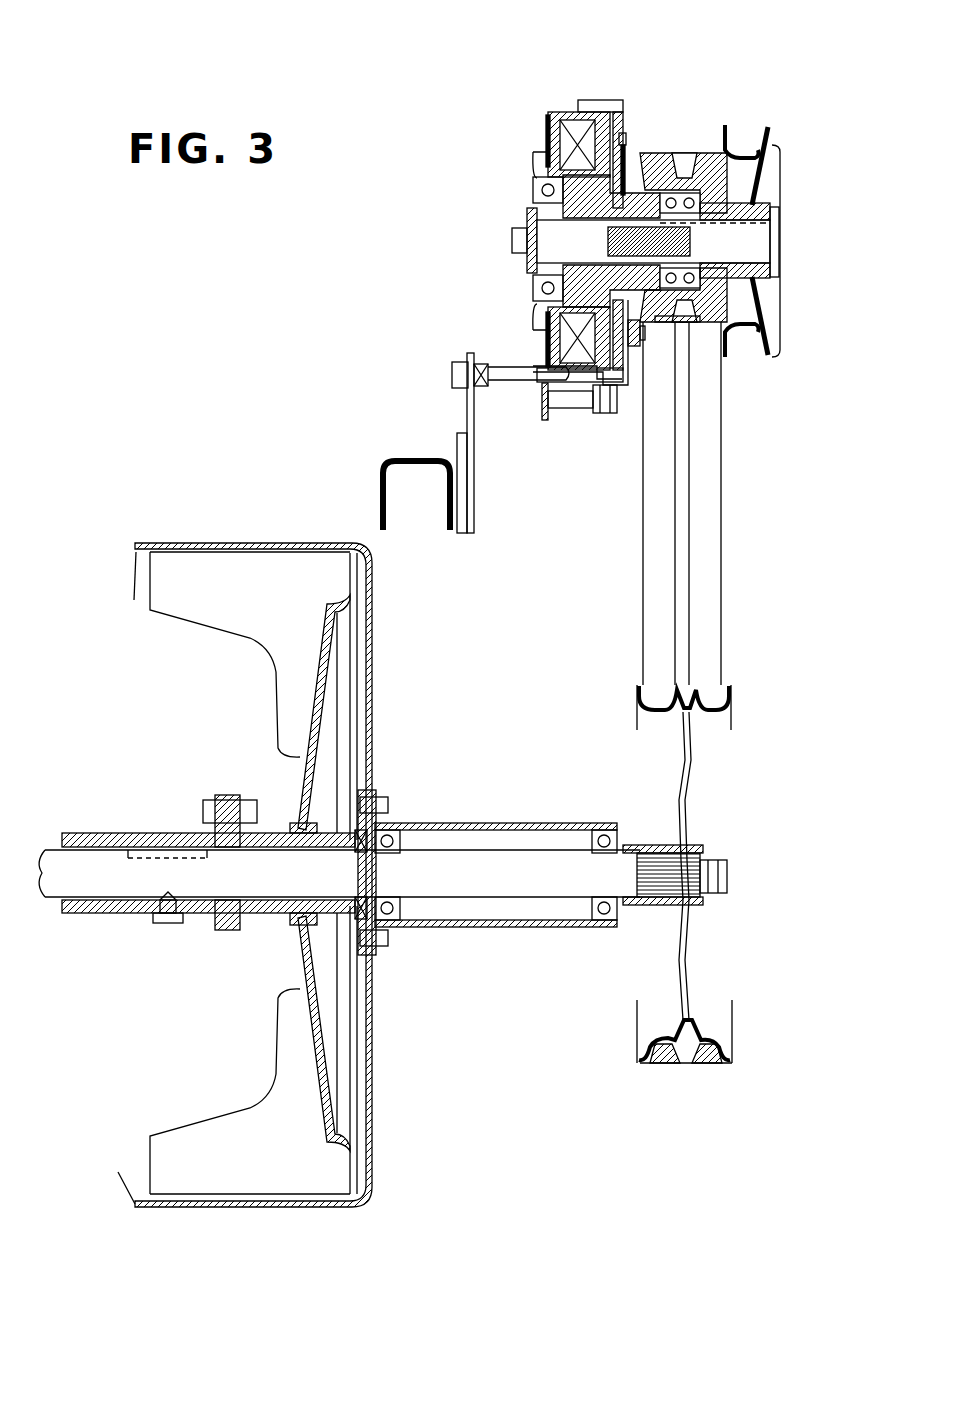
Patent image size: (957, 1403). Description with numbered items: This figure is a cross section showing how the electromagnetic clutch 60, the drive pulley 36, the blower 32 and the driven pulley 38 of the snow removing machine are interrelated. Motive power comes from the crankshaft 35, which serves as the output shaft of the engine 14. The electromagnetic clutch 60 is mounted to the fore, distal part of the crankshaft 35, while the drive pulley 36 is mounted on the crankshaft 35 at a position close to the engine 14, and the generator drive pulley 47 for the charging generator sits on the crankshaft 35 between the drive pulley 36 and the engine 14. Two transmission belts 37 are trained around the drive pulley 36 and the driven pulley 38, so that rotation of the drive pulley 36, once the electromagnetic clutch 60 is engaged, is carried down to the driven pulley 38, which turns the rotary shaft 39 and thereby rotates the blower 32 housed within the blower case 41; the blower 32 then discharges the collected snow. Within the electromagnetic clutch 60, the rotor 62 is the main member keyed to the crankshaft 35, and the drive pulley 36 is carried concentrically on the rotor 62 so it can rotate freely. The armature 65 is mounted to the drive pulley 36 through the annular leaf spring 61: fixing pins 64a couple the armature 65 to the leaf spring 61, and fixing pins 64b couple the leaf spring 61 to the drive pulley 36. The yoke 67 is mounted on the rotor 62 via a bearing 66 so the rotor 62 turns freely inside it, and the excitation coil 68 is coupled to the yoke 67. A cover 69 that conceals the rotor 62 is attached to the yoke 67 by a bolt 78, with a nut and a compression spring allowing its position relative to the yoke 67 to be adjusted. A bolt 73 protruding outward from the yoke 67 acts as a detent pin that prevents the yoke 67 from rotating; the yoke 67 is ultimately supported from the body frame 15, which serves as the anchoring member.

The engine 14 is at (809, 157).
The body frame 15 is at (403, 458).
The blower 32 is at (192, 577).
The crankshaft 35 is at (752, 243).
The drive pulley 36 is at (680, 153).
The transmission belts 37 is at (722, 608).
The driven pulley 38 is at (692, 755).
The rotary shaft 39 is at (493, 863).
The blower case 41 is at (253, 540).
The generator drive pulley 47 is at (747, 122).
The electromagnetic clutch 60 is at (523, 168).
The leaf spring 61 is at (677, 320).
The rotor 62 is at (600, 110).
The fixing pins 64a is at (627, 140).
The fixing pins 64b is at (640, 333).
The armature 65 is at (613, 113).
The bearing 66 is at (537, 292).
The yoke 67 is at (505, 380).
The excitation coil 68 is at (547, 150).
The cover 69 is at (595, 417).
The bolt 73 is at (478, 420).
The bolt 78 is at (567, 397).